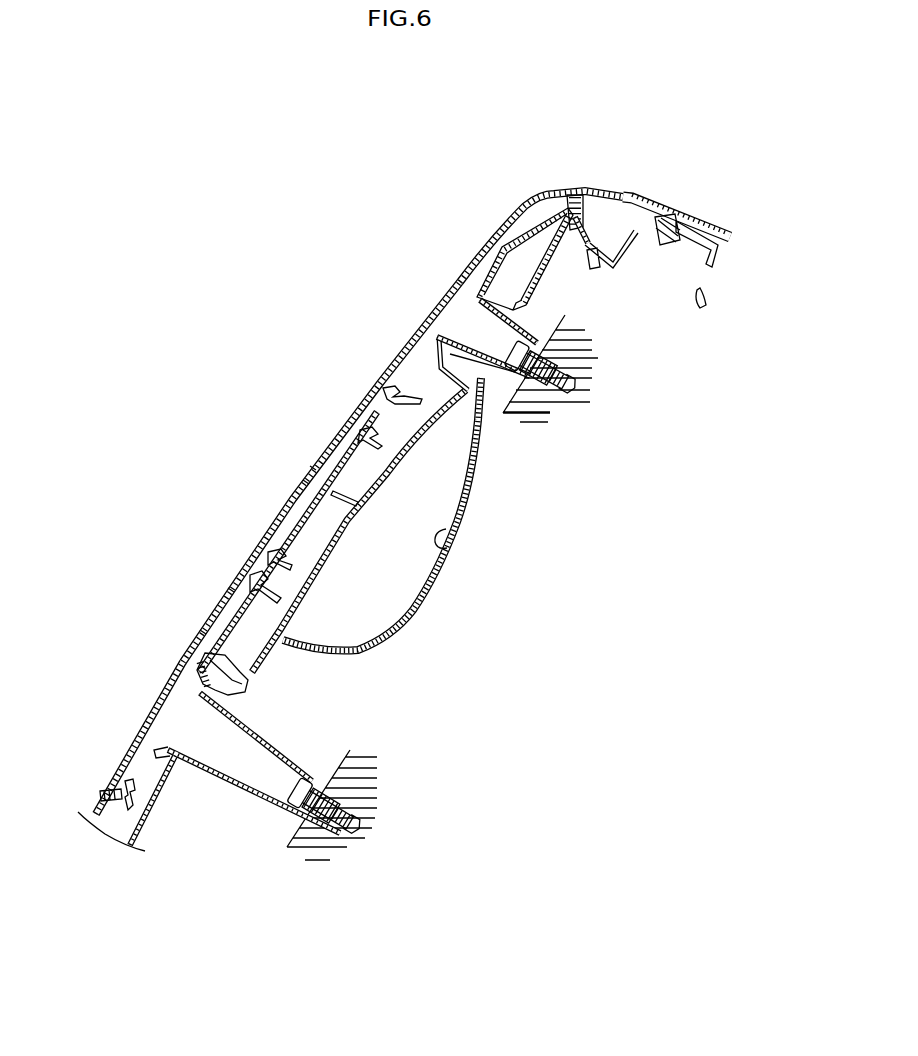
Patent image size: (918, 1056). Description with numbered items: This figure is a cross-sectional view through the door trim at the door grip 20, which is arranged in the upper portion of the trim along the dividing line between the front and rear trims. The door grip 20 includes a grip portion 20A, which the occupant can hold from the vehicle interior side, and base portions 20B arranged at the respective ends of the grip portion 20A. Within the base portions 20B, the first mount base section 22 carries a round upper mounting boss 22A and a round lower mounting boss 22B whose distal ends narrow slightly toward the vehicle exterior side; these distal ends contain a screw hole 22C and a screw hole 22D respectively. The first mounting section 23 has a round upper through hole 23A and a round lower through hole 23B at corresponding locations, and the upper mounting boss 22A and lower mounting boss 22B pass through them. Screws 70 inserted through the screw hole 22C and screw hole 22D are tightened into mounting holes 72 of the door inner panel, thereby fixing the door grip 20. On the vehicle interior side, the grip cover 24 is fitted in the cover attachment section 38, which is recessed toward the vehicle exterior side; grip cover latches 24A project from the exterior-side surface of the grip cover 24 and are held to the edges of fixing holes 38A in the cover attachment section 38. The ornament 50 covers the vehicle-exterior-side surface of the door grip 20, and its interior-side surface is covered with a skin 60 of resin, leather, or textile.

The door grip 20 is at (294, 174).
The grip portion 20A is at (316, 419).
The base portions 20B is at (491, 186).
The first mount base section 22 is at (529, 240).
The upper mounting boss 22A is at (505, 338).
The lower mounting boss 22B is at (238, 788).
The screw hole 22C is at (533, 368).
The screw hole 22D is at (296, 778).
The first mounting section 23 is at (588, 240).
The upper through hole 23A is at (462, 355).
The lower through hole 23B is at (230, 700).
The grip cover 24 is at (391, 340).
The grip cover latches 24A is at (247, 567).
The cover attachment section 38 is at (123, 773).
The fixing holes 38A is at (258, 567).
The ornament 50 is at (467, 520).
The skin 60 is at (445, 548).
The screws 70 is at (572, 380).
The mounting holes 72 is at (550, 378).